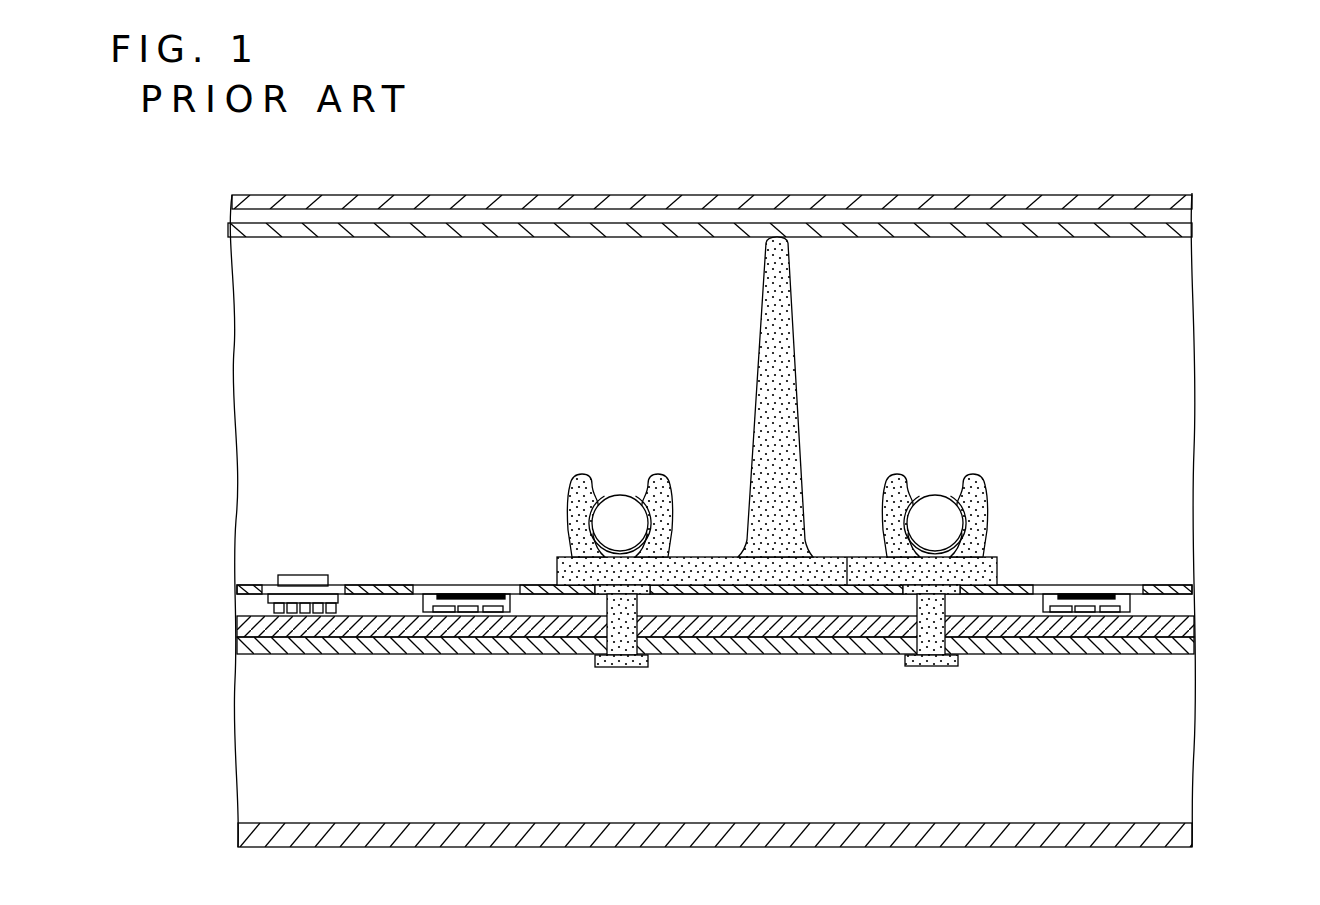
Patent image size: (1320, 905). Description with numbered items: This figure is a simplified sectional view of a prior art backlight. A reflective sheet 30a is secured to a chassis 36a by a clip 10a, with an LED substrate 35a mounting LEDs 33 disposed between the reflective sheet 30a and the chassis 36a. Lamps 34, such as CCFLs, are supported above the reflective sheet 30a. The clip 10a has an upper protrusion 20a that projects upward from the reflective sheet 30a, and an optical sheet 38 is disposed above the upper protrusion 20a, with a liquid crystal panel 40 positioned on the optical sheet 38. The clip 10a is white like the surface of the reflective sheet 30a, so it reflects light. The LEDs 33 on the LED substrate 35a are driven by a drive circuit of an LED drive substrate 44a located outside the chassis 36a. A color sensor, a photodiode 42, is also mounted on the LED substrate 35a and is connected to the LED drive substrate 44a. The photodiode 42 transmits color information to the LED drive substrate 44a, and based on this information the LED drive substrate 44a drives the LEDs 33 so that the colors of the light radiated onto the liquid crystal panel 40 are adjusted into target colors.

The clip 10a is at (776, 452).
The upper protrusion 20a is at (795, 370).
The reflective sheet 30a is at (1170, 582).
The LEDs 33 is at (462, 585).
The lamps 34 is at (777, 482).
The LED substrate 35a is at (1197, 620).
The chassis 36a is at (1195, 643).
The optical sheet 38 is at (1187, 230).
The liquid crystal panel 40 is at (1187, 205).
The photodiode 42 is at (302, 575).
The LED drive substrate 44a is at (1185, 832).